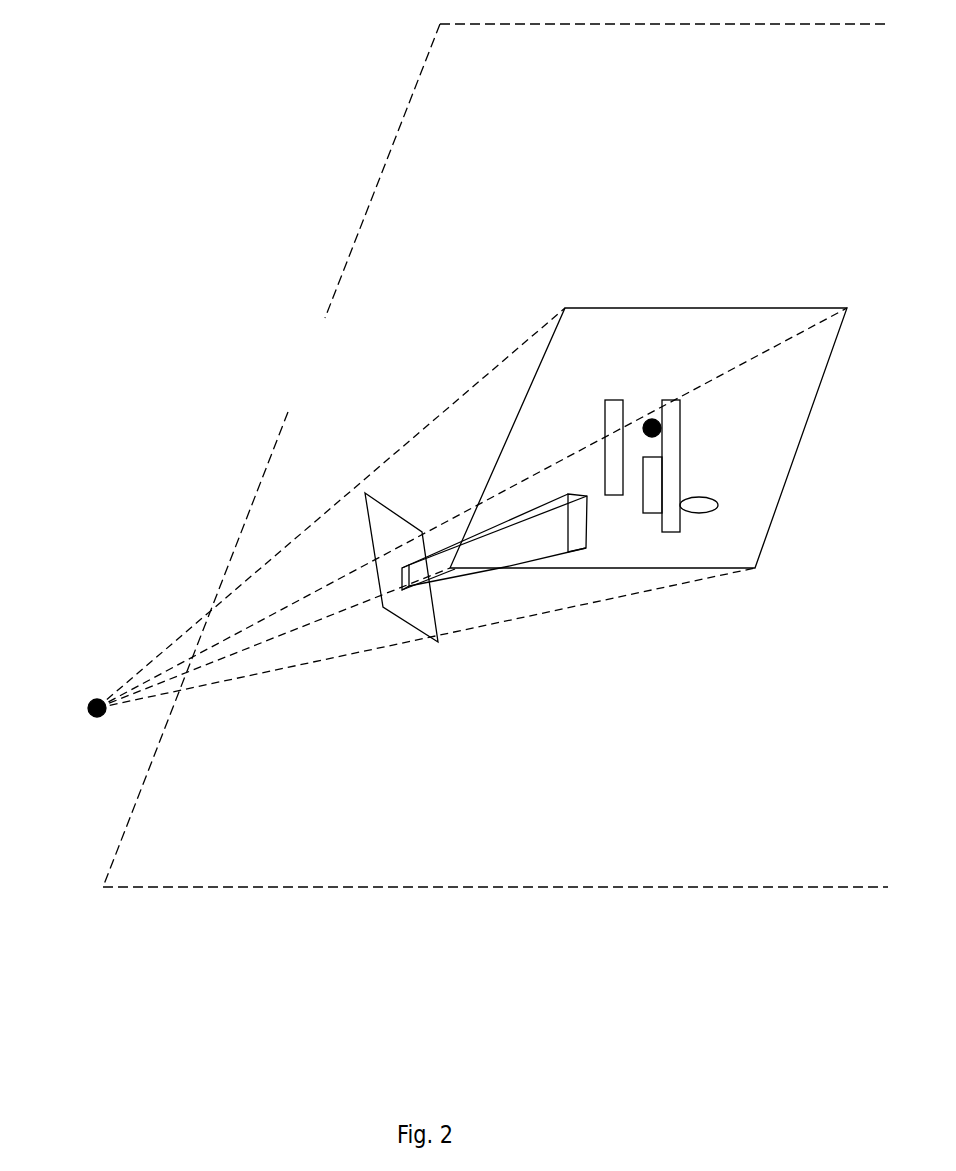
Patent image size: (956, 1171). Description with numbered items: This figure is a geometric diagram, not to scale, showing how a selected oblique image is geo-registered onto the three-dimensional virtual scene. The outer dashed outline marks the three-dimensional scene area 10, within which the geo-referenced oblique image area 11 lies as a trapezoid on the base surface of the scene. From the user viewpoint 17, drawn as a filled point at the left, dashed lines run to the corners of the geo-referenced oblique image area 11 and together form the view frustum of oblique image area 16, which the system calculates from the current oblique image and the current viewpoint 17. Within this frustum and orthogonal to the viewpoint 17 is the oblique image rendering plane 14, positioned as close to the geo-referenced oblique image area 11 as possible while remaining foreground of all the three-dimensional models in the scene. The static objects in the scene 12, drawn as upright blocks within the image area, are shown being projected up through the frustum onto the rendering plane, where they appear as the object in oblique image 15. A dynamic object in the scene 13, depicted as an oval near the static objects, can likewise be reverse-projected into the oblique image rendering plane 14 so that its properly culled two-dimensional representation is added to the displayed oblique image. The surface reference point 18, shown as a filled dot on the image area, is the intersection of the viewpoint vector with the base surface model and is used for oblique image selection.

The 3D scene area 10 is at (495, 455).
The geo-referenced oblique image area 11 is at (700, 322).
The static objects in 3D scene 12 is at (590, 536).
The dynamic object in 3D scene 13 is at (720, 512).
The oblique image rendering plane 14 is at (380, 533).
The object in oblique image 15 is at (402, 590).
The view frustum of oblique image area 16 is at (458, 440).
The viewpoint 17 is at (87, 700).
The surface reference point 18 is at (645, 418).